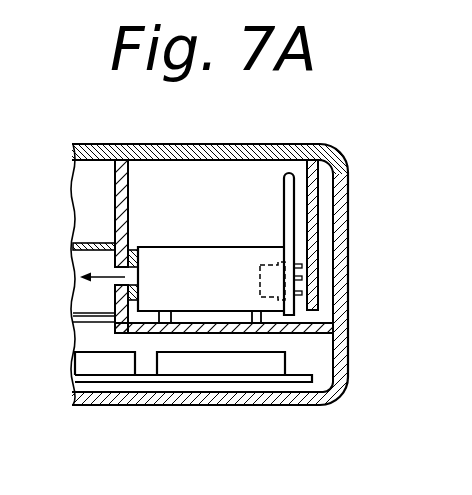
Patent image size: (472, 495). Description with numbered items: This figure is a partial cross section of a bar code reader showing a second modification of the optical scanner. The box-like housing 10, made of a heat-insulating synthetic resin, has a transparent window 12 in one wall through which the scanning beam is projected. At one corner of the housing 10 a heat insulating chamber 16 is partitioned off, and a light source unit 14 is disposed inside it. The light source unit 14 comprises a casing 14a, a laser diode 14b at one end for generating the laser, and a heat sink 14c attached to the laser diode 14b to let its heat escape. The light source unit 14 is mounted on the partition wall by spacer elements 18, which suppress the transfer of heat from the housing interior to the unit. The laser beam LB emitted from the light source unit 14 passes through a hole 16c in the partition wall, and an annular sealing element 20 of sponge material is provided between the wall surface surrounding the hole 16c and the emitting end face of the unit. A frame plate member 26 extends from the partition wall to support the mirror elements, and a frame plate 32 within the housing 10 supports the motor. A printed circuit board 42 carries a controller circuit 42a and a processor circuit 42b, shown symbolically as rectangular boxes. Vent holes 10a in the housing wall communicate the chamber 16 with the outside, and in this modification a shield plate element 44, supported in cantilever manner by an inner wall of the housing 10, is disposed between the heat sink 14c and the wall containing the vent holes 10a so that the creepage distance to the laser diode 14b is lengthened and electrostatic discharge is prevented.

The housing 10 is at (292, 143).
The vent holes 10a is at (335, 206).
The transparent window 12 is at (152, 143).
The light source unit 14 is at (217, 246).
The casing 14a is at (157, 247).
The laser diode 14b is at (260, 275).
The heat sink 14c is at (285, 187).
The heat insulating chamber 16 is at (201, 189).
The hole 16c is at (115, 268).
The spacer elements 18 is at (173, 312).
The annular sealing element 20 is at (138, 267).
The frame plate member 26 is at (93, 241).
The frame plate 32 is at (94, 317).
The printed circuit board 42 is at (185, 383).
The controller circuit 42a is at (110, 382).
The processor circuit 42b is at (260, 385).
The shield plate element 44 is at (322, 173).
The laser beam LB is at (105, 280).